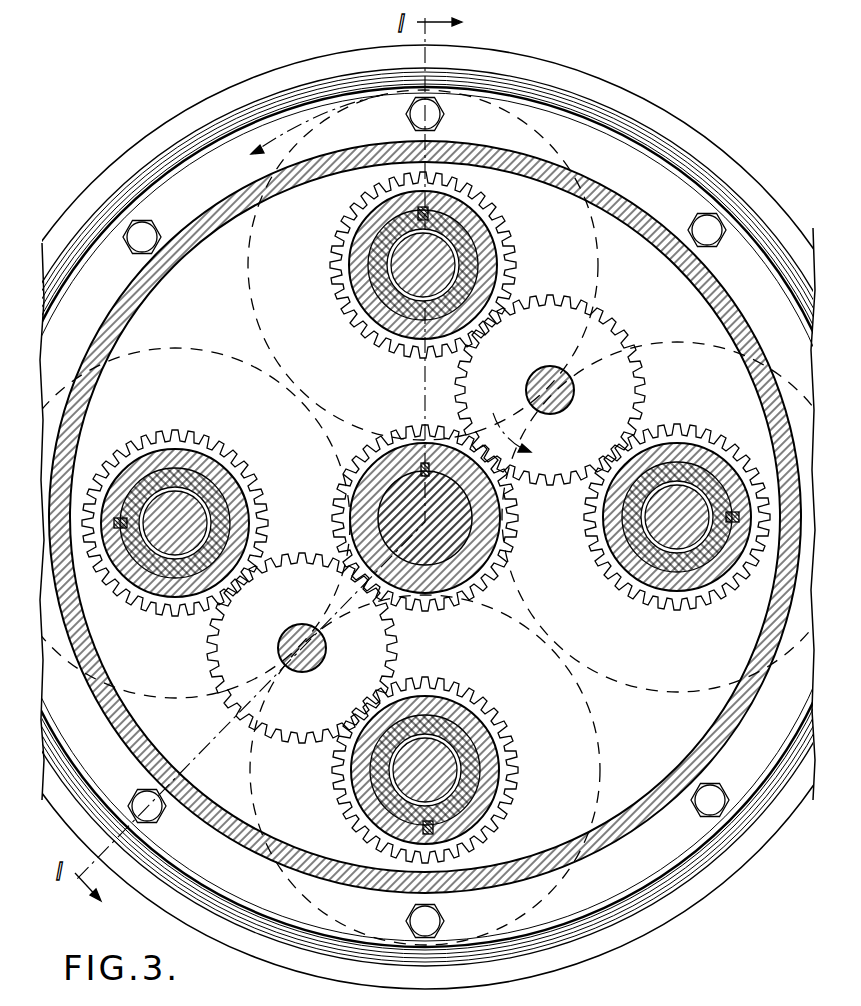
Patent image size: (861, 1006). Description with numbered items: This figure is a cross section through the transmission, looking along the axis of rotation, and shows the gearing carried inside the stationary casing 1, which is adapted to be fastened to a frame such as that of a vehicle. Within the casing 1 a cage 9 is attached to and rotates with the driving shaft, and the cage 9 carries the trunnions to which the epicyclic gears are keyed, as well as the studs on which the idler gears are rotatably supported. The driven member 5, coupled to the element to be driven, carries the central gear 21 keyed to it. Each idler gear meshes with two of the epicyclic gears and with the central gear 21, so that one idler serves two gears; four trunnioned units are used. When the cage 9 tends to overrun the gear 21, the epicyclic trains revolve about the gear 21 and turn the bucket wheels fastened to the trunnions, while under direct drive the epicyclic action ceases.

The stationary casing 1 is at (678, 150).
The cage 9 is at (688, 197).
The driven member 5 is at (387, 513).
The gear 21 is at (513, 517).